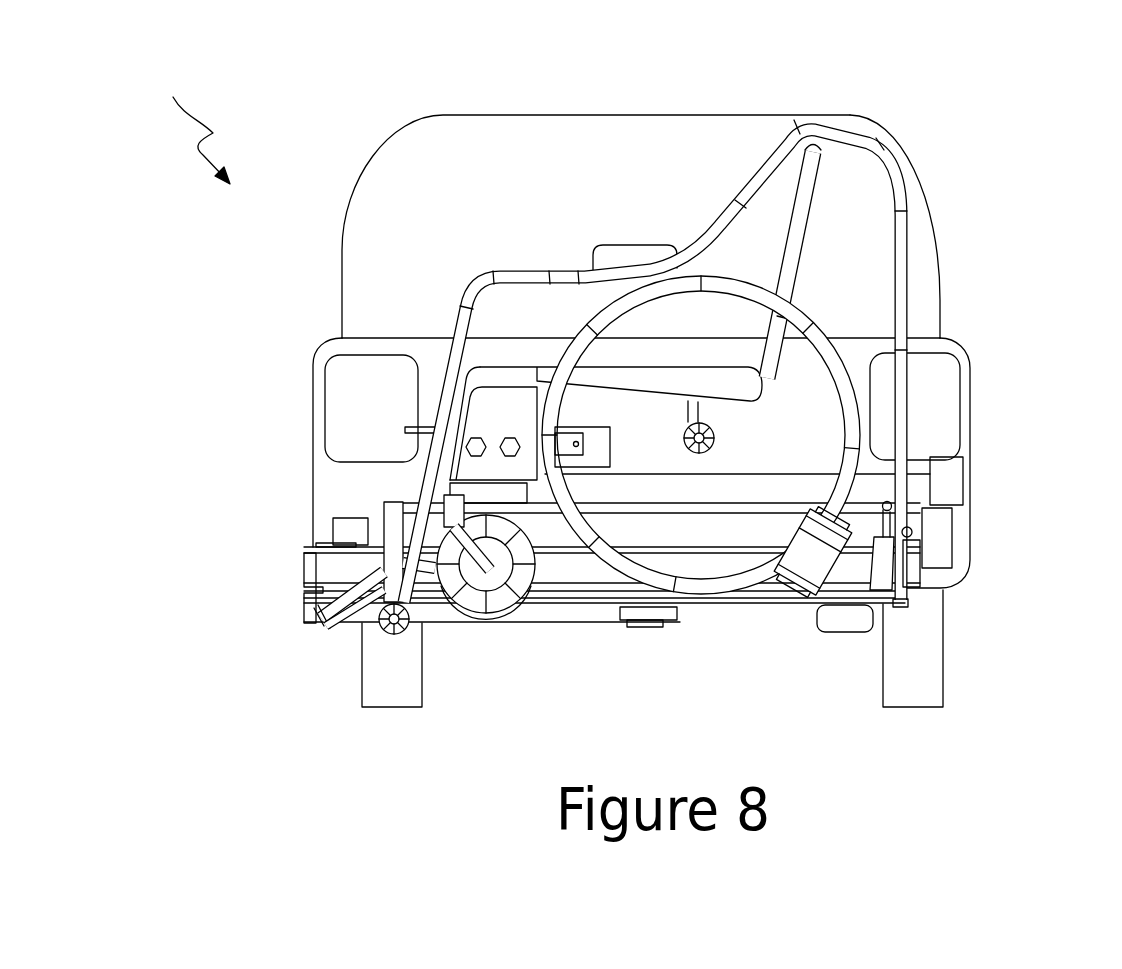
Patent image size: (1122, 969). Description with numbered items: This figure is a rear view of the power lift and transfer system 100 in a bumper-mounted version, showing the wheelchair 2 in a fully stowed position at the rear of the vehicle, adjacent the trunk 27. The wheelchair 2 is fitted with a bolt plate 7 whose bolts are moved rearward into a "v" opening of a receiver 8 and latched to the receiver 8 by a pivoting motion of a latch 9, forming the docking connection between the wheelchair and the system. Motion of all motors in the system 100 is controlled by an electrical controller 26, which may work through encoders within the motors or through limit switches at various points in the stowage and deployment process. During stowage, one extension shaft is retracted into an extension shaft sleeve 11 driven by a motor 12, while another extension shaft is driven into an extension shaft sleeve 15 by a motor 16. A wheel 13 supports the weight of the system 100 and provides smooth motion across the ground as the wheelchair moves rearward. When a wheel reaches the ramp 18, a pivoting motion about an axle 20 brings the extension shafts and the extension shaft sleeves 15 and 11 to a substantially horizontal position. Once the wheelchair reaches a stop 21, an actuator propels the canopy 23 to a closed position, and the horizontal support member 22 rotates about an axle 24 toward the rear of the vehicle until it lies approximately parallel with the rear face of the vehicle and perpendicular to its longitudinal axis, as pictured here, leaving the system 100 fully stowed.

The power lift and transfer system 100 is at (180, 111).
The wheelchair 2 is at (790, 257).
The bolt plate 7 is at (492, 423).
The receiver 8 is at (600, 432).
The latch 9 is at (420, 428).
The extension shaft sleeve 11 is at (627, 493).
The motor 12 is at (948, 480).
The wheel 13 is at (383, 630).
The extension shaft sleeve 15 is at (608, 538).
The motor 16 is at (937, 548).
The ramp 18 is at (313, 613).
The axle 20 is at (912, 533).
The stop 21 is at (812, 553).
The horizontal support member 22 is at (711, 570).
The canopy 23 is at (893, 178).
The axle 24 is at (353, 530).
The electrical controller 26 is at (840, 623).
The trunk 27 is at (620, 254).